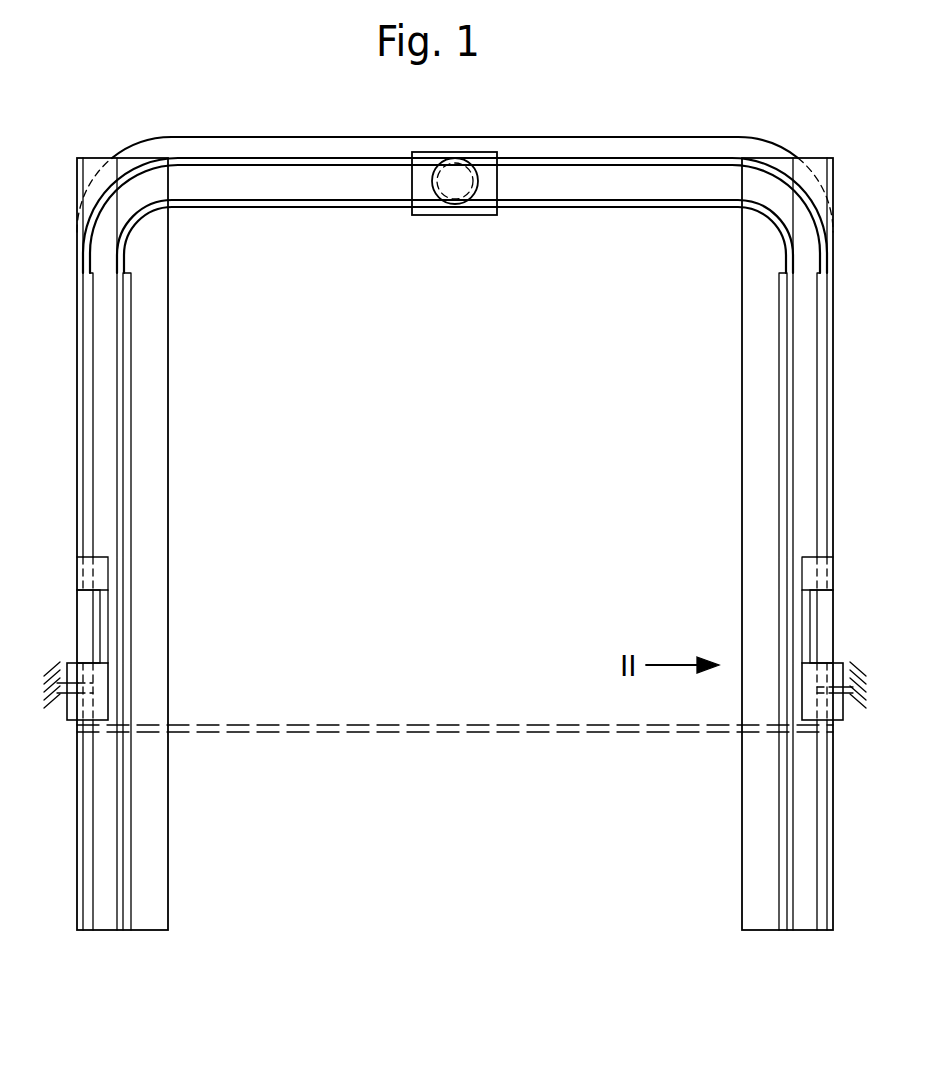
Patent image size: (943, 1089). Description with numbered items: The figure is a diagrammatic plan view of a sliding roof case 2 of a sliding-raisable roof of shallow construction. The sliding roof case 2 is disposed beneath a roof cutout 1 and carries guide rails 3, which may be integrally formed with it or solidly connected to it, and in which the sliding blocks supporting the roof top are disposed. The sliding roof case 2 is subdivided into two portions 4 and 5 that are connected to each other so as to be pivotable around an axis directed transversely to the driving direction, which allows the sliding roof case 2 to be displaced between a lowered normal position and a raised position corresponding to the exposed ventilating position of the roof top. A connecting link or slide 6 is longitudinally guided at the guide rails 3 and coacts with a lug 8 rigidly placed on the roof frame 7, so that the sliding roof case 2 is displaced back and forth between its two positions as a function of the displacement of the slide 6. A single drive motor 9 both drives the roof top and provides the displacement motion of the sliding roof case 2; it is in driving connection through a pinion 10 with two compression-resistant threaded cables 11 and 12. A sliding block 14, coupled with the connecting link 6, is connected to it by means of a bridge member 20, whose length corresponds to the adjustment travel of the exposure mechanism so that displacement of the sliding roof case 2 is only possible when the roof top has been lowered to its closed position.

The roof cutout 1 is at (64, 674).
The sliding roof case 2 is at (462, 422).
The guide rails 3 is at (155, 376).
The portion 4 is at (348, 725).
The portion 5 is at (348, 733).
The connecting link or slide 6 is at (75, 714).
The roof frame 7 is at (53, 700).
The lug 8 is at (80, 698).
The drive motor 9 is at (488, 172).
The pinion 10 is at (458, 188).
The threaded cable 11 is at (297, 157).
The threaded cable 12 is at (304, 208).
The sliding block 14 is at (100, 567).
The bridge member 20 is at (105, 628).